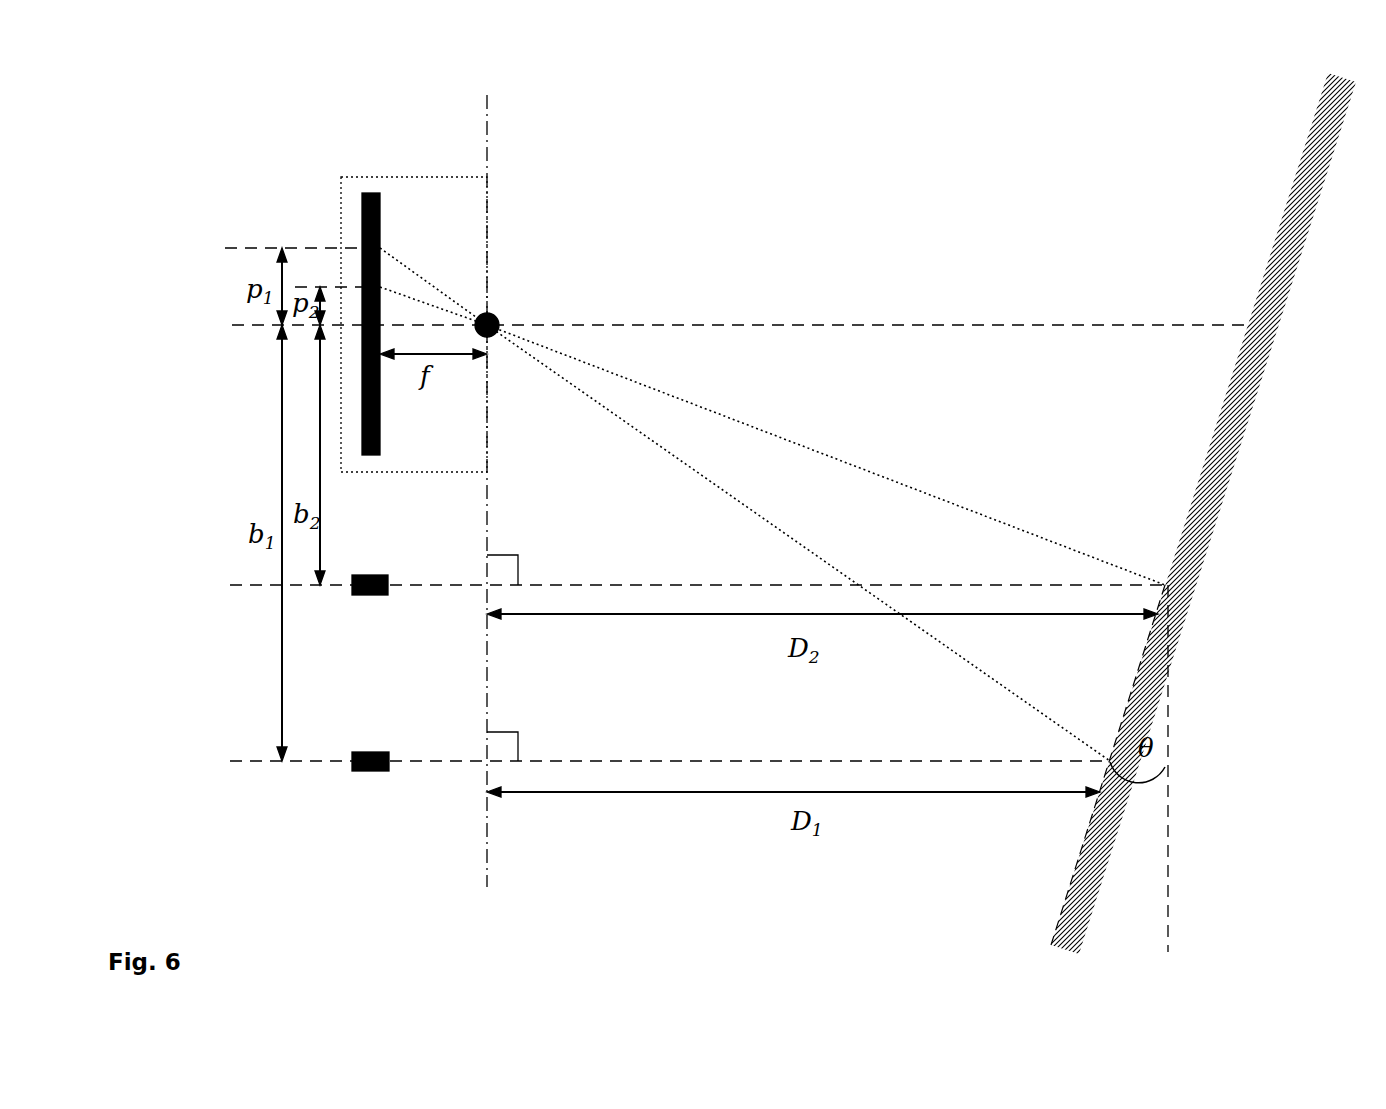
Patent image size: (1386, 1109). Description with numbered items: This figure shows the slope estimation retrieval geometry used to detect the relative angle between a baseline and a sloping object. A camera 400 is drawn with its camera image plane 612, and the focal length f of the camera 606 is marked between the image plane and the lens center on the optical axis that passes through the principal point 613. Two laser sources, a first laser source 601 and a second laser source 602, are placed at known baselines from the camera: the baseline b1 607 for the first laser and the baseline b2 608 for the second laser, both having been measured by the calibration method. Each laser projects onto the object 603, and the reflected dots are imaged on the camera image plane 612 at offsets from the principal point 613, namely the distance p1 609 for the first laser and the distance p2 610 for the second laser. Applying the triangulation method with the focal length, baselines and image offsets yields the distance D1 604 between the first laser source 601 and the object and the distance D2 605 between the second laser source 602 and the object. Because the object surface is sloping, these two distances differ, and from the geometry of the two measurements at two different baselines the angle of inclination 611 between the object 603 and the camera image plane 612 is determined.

The camera 400 is at (430, 177).
The first laser source 601 is at (352, 770).
The second laser source 602 is at (367, 595).
The object 603 is at (1238, 455).
The distance D1 604 is at (653, 792).
The distance D2 605 is at (590, 614).
The focal length f of the camera 606 is at (450, 357).
The baseline b1 607 is at (282, 628).
The baseline b2 608 is at (320, 448).
The distance p1 609 is at (280, 278).
The distance p2 610 is at (320, 287).
The angle of inclination 611 is at (1163, 772).
The camera image plane 612 is at (380, 208).
The principal point 613 is at (765, 325).